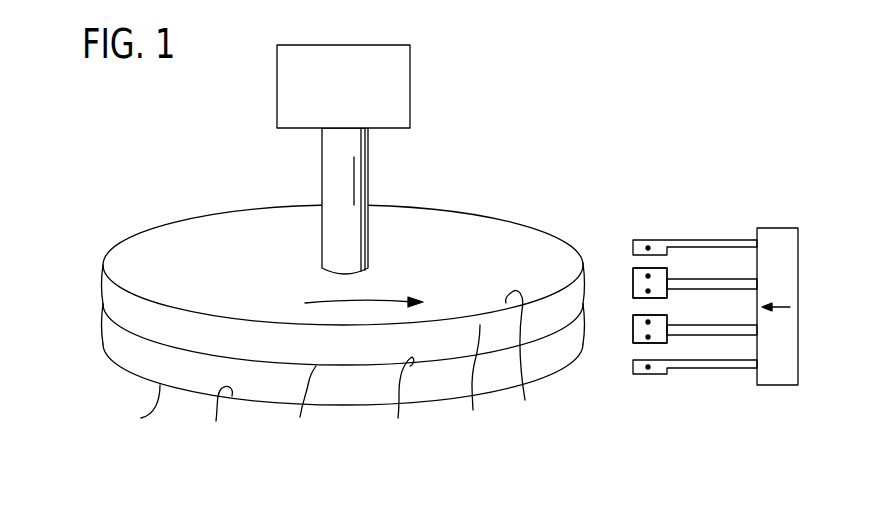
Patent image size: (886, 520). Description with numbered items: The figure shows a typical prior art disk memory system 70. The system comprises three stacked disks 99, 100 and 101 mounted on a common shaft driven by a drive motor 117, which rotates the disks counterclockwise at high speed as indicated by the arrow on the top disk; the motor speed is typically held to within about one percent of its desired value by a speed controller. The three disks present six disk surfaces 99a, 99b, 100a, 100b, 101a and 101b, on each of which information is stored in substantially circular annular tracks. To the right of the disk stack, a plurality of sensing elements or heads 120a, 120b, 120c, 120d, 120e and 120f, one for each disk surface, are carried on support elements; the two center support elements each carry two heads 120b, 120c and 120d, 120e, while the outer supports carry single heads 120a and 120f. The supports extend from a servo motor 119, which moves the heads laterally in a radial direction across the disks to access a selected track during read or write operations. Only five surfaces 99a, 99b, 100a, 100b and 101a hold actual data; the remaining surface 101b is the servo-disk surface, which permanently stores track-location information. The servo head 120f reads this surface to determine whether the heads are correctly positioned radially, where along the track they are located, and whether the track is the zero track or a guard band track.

The disk memory system 70 is at (226, 159).
The disk 99 is at (103, 266).
The disk surface 99a is at (528, 365).
The disk surface 99b is at (471, 388).
The disk 100 is at (105, 305).
The disk surface 100a is at (406, 408).
The disk surface 100b is at (304, 412).
The disk 101 is at (105, 343).
The disk surface 101a is at (210, 422).
The servo-disk surface 101b is at (124, 411).
The drive motor 117 is at (410, 84).
The servo motor 119 is at (774, 378).
The head 120a is at (637, 240).
The head 120b is at (637, 268).
The head 120c is at (637, 292).
The head 120d is at (643, 318).
The head 120e is at (643, 341).
The servo head 120f is at (646, 369).